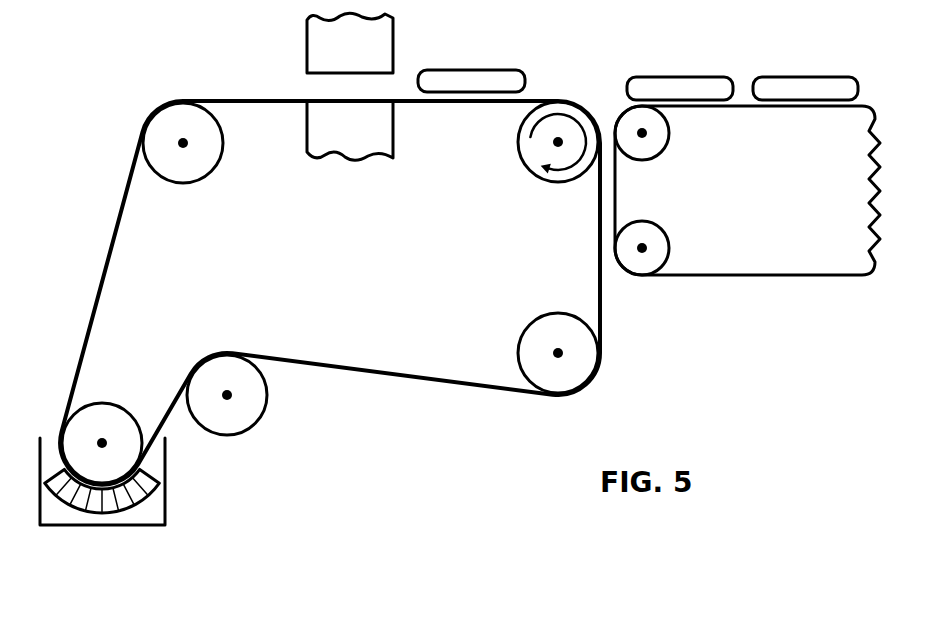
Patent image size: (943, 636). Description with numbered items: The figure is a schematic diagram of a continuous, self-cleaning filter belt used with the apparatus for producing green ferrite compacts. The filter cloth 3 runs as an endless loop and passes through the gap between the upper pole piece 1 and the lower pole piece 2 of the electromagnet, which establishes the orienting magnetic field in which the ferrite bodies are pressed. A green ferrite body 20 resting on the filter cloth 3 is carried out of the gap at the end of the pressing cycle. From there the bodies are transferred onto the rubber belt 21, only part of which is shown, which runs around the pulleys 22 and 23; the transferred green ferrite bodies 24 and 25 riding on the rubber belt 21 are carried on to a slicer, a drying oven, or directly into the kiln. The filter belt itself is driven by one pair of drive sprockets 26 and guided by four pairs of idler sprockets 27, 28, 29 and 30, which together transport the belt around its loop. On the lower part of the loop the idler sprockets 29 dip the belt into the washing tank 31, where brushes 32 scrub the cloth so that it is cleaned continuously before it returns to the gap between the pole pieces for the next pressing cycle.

The upper pole piece 1 is at (325, 41).
The lower pole piece 2 is at (375, 138).
The filter cloth 3 is at (256, 101).
The green ferrite body 20 is at (450, 85).
The rubber belt 21 is at (735, 277).
The pulley 22 is at (655, 134).
The pulley 23 is at (657, 258).
The transferred green ferrite body 24 is at (658, 90).
The transferred green ferrite body 25 is at (787, 88).
The drive sprockets 26 is at (543, 172).
The idler sprockets 27 is at (537, 362).
The idler sprockets 28 is at (247, 405).
The idler sprockets 29 is at (122, 425).
The idler sprockets 30 is at (168, 173).
The washing tank 31 is at (167, 507).
The brushes 32 is at (112, 500).